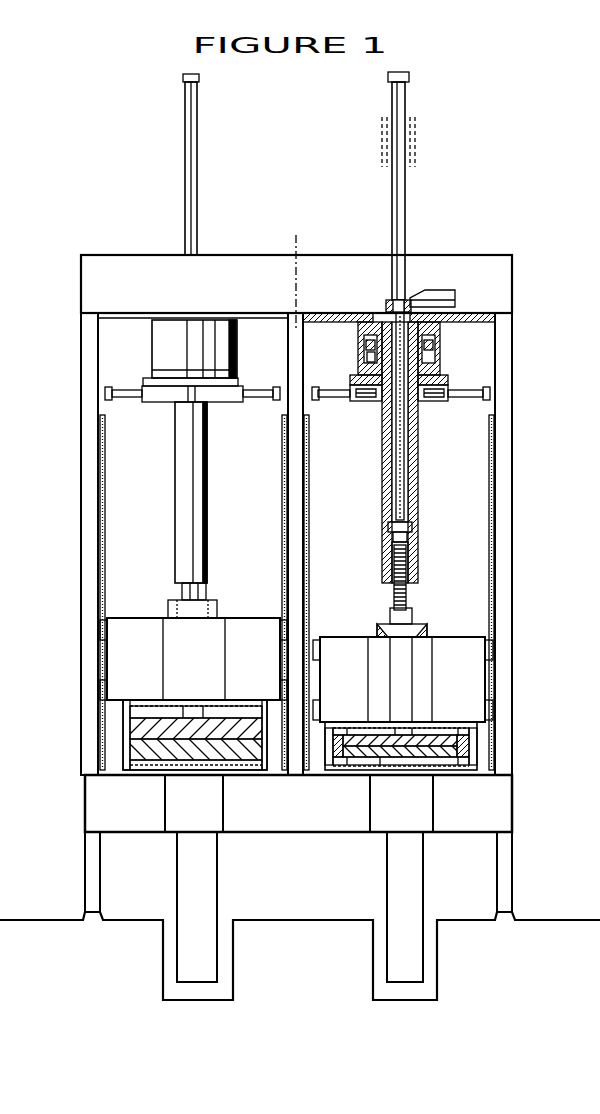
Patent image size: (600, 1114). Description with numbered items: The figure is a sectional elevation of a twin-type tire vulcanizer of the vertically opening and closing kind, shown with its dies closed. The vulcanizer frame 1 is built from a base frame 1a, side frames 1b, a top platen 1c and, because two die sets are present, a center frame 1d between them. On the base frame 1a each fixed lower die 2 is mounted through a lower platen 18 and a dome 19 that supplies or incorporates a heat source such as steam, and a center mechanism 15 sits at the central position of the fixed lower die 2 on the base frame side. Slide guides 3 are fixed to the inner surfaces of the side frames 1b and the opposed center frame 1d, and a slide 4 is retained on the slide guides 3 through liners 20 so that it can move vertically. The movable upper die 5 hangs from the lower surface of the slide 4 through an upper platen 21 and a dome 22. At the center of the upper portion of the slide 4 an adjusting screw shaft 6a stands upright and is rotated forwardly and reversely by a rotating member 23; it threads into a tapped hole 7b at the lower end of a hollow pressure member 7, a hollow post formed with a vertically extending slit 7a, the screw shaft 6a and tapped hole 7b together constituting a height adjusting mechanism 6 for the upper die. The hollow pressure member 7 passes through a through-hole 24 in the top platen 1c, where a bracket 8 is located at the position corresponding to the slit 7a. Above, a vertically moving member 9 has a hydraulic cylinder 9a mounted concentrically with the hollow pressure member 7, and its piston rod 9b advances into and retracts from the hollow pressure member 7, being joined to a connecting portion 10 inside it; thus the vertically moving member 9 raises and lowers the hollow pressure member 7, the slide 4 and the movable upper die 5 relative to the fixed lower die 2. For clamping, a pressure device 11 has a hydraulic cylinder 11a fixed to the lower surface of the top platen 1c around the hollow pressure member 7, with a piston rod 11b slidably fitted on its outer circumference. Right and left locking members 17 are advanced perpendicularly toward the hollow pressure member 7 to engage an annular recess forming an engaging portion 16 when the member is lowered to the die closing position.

The vulcanizer frame 1 is at (300, 588).
The base frame 1a is at (140, 818).
The side frames 1b is at (81, 415).
The top platen 1c is at (145, 278).
The center frame 1d is at (288, 357).
The fixed lower die 2 is at (130, 752).
The slide guides 3 is at (100, 519).
The slide 4 is at (138, 632).
The movable upper die 5 is at (130, 728).
The height adjusting mechanism 6 is at (210, 600).
The adjusting screw shaft 6a is at (195, 583).
The hollow pressure member 7 is at (180, 522).
The slit 7a is at (418, 510).
The tapped hole 7b is at (392, 567).
The bracket 8 is at (436, 295).
The vertically moving member 9 is at (199, 155).
The hydraulic cylinder 9a is at (186, 175).
The piston rod 9b is at (396, 445).
The connecting portion 10 is at (388, 523).
The pressure device 11 is at (240, 330).
The hydraulic cylinder 11a is at (152, 360).
The piston rod 11b is at (367, 350).
The center mechanism 15 is at (180, 892).
The engaging portion 16 is at (440, 372).
The locking members 17 is at (378, 398).
The lower platen 18 is at (362, 768).
The dome 19 is at (465, 768).
The liners 20 is at (493, 708).
The upper platen 21 is at (338, 768).
The dome 22 is at (478, 750).
The rotating member 23 is at (412, 610).
The through-hole 24 is at (384, 310).